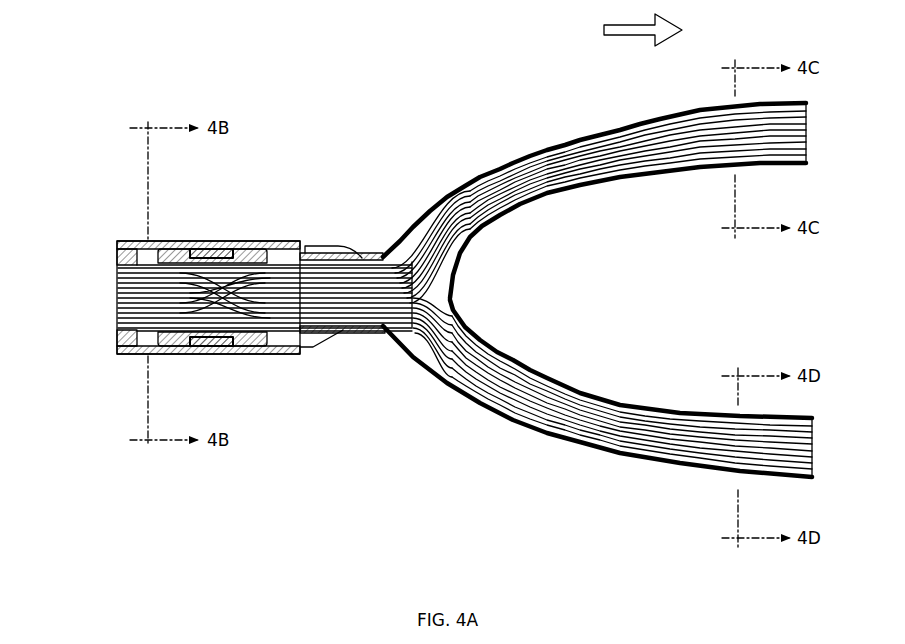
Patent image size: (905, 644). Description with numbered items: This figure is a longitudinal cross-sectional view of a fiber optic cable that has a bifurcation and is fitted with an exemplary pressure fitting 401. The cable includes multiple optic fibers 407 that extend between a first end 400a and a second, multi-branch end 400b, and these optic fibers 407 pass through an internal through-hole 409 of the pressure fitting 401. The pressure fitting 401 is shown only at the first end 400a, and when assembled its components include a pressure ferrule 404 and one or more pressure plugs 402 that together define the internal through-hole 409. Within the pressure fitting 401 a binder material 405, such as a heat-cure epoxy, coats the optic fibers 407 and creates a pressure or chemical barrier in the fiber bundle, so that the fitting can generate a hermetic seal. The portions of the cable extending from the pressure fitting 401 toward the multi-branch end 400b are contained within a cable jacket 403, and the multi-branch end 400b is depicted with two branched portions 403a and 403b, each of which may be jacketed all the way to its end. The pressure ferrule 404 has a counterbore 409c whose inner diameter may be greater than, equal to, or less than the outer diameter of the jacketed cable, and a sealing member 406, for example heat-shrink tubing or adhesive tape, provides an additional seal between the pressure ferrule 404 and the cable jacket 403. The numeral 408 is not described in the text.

The first end 400a is at (230, 300).
The second, multi-branch end 400b is at (633, 30).
The pressure fitting 401 is at (265, 184).
The pressure plug 402 is at (240, 348).
The cable jacket 403 is at (565, 301).
The branched portion 403a is at (620, 176).
The branched portion 403b is at (623, 462).
The pressure ferrule 404 is at (133, 354).
The binder material 405 is at (205, 295).
The sealing member 406 is at (342, 263).
The optic fibers 407 is at (452, 292).
The end block 408 is at (120, 340).
The internal through-hole 409 is at (150, 332).
The counterbore 409c is at (322, 247).